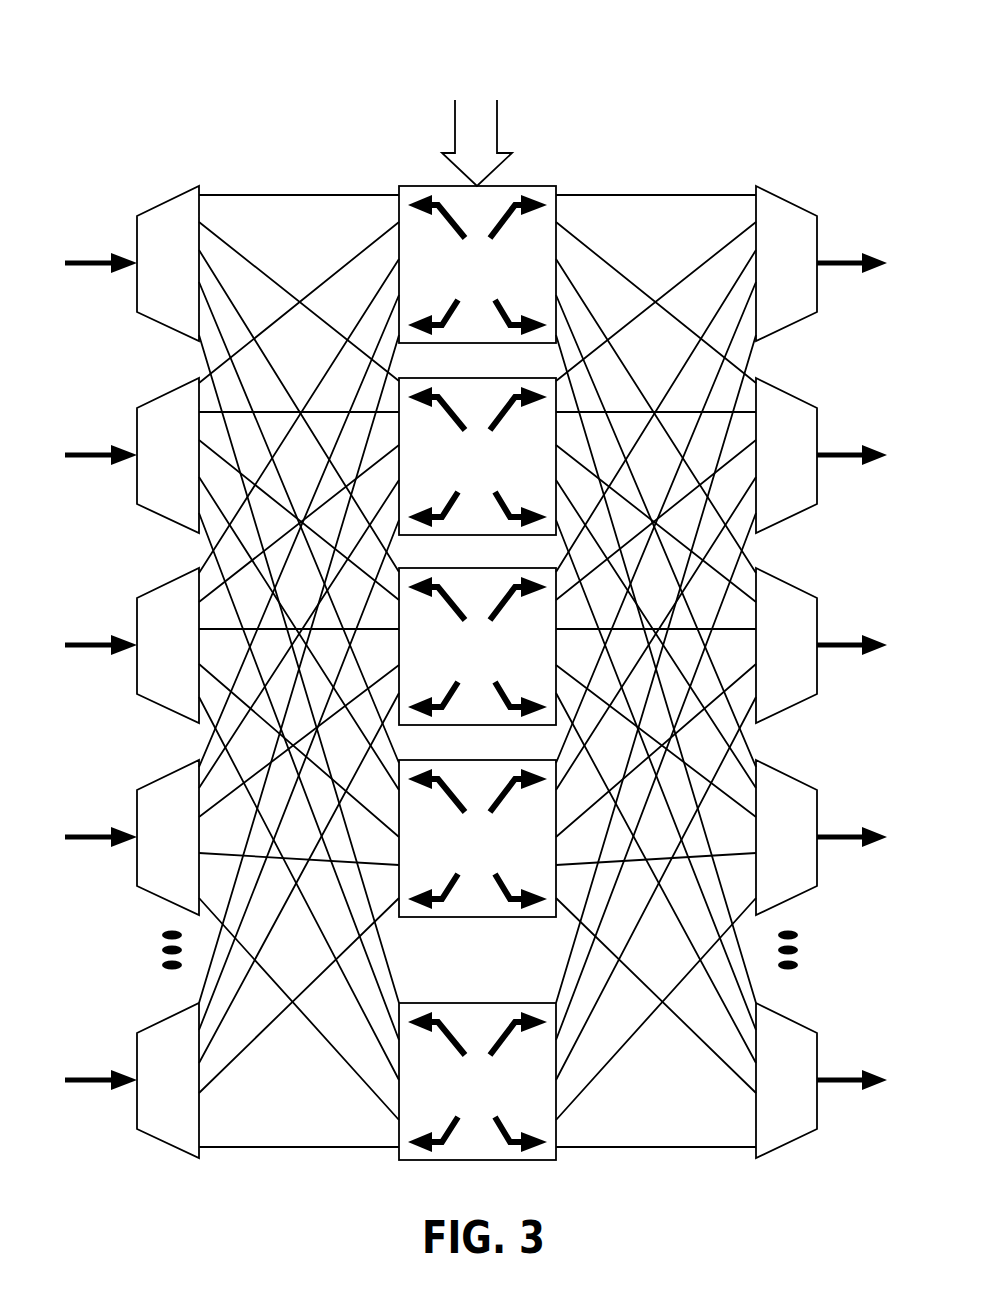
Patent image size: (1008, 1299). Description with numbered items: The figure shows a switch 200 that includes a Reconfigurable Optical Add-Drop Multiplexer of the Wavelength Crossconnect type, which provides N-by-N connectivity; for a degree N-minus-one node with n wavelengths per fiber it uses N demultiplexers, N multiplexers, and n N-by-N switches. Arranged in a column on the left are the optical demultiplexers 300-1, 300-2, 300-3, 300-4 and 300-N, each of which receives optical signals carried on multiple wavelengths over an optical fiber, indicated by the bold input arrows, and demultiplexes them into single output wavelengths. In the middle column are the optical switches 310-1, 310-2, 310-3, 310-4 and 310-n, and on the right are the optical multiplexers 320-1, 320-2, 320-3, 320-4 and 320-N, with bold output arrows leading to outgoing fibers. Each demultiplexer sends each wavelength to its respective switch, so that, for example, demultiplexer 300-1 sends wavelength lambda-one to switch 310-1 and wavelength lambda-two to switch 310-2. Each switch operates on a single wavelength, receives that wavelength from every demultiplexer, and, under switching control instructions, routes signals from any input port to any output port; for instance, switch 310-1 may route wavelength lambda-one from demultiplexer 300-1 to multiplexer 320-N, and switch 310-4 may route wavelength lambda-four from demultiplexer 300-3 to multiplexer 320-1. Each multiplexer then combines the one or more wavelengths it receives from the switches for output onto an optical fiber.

The switch 200 is at (98, 74).
The optical demultiplexer 300-1 is at (165, 201).
The optical demultiplexer 300-2 is at (165, 393).
The optical demultiplexer 300-3 is at (165, 583).
The optical demultiplexer 300-4 is at (165, 775).
The optical demultiplexer 300-N is at (165, 1018).
The optical switch 310-1 is at (477, 264).
The optical switch 310-2 is at (477, 456).
The optical switch 310-3 is at (477, 646).
The optical switch 310-4 is at (477, 838).
The optical switch 310-n is at (477, 1081).
The optical multiplexer 320-1 is at (803, 212).
The optical multiplexer 320-2 is at (803, 404).
The optical multiplexer 320-3 is at (803, 594).
The optical multiplexer 320-4 is at (793, 786).
The optical multiplexer 320-N is at (800, 1021).